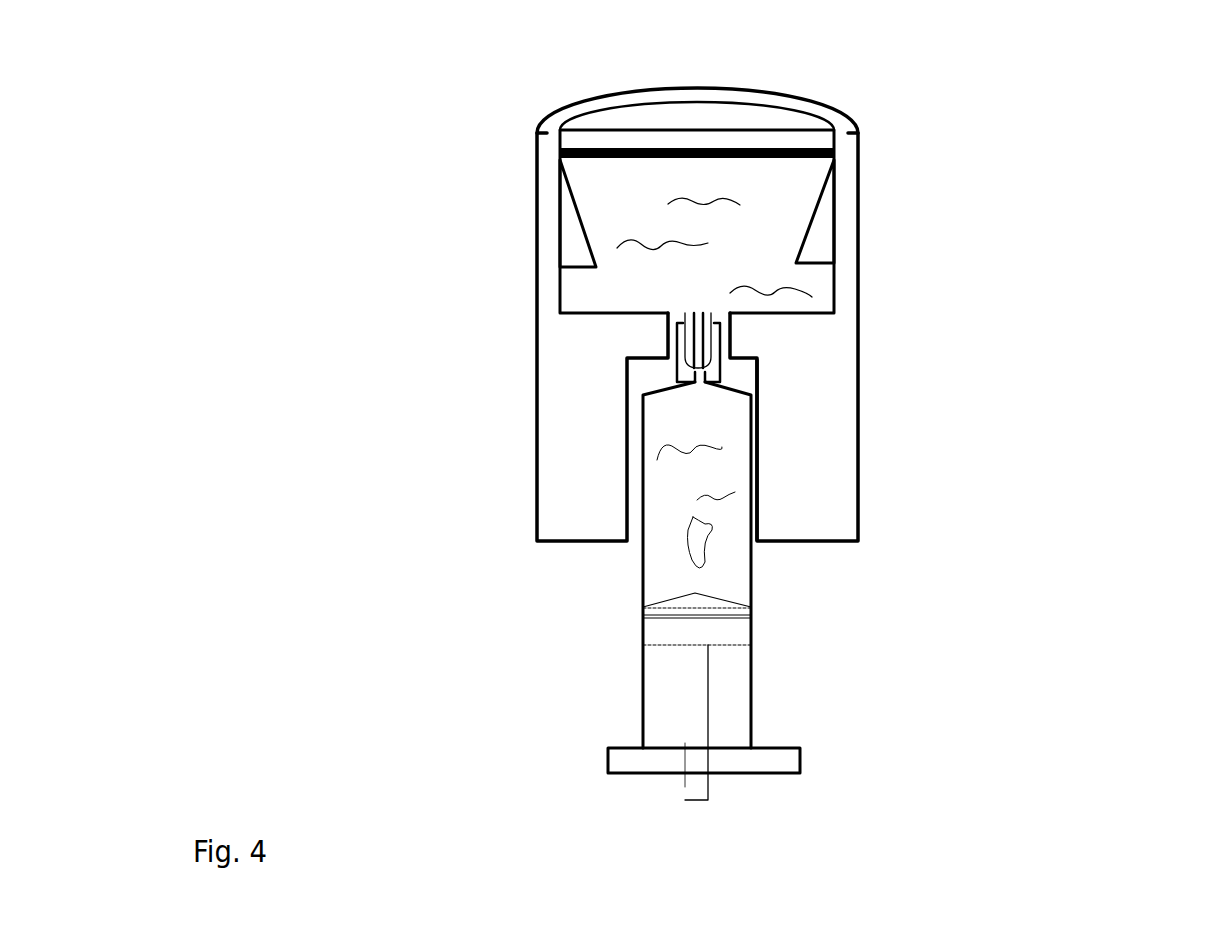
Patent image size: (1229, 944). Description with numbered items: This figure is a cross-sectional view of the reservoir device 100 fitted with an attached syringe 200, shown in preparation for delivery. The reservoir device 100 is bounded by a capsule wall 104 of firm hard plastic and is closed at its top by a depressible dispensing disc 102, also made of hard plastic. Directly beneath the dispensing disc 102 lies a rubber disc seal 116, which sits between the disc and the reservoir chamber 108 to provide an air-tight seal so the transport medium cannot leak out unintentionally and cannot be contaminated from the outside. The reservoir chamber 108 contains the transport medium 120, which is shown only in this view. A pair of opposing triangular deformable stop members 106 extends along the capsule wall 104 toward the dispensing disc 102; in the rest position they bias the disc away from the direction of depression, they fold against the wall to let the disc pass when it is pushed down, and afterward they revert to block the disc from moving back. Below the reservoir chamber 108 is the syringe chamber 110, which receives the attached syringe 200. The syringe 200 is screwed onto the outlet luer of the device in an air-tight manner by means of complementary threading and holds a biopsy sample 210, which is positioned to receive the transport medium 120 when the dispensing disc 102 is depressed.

The reservoir device 100 is at (445, 455).
The dispensing disc 102 is at (690, 113).
The capsule wall 104 is at (861, 488).
The stop members 106 is at (808, 253).
The reservoir chamber 108 is at (767, 220).
The syringe chamber 110 is at (762, 440).
The disc seal 116 is at (827, 153).
The transport medium 120 is at (632, 210).
The syringe 200 is at (580, 633).
The biopsy sample 210 is at (683, 545).